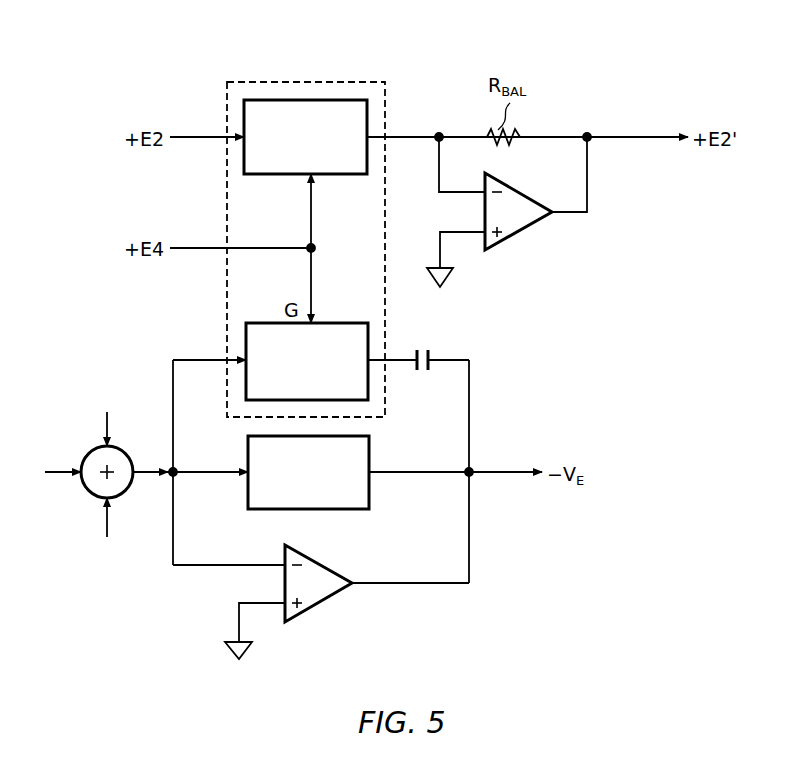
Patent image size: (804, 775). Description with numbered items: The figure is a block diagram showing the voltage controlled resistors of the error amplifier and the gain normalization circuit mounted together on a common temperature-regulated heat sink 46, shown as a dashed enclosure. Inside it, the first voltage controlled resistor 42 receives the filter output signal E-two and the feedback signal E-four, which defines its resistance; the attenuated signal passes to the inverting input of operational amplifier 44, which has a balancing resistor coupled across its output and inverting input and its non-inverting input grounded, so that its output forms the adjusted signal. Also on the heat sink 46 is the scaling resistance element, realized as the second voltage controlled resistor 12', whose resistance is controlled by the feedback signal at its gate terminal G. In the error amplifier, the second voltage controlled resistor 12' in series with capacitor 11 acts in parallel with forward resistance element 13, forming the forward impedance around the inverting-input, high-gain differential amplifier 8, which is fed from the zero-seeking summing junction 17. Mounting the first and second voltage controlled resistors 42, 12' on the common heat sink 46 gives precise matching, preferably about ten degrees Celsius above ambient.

The temperature-regulated heat sink 46 is at (366, 82).
The voltage controlled resistor VCR1 42 is at (345, 174).
The operational amplifier 44 is at (512, 187).
The voltage controlled resistor VCR2 12' is at (308, 335).
The capacitor C1 11 is at (425, 352).
The forward resistance element RFWD 13 is at (369, 448).
The summing junction 17 is at (88, 450).
The differential amplifier 8 is at (312, 557).